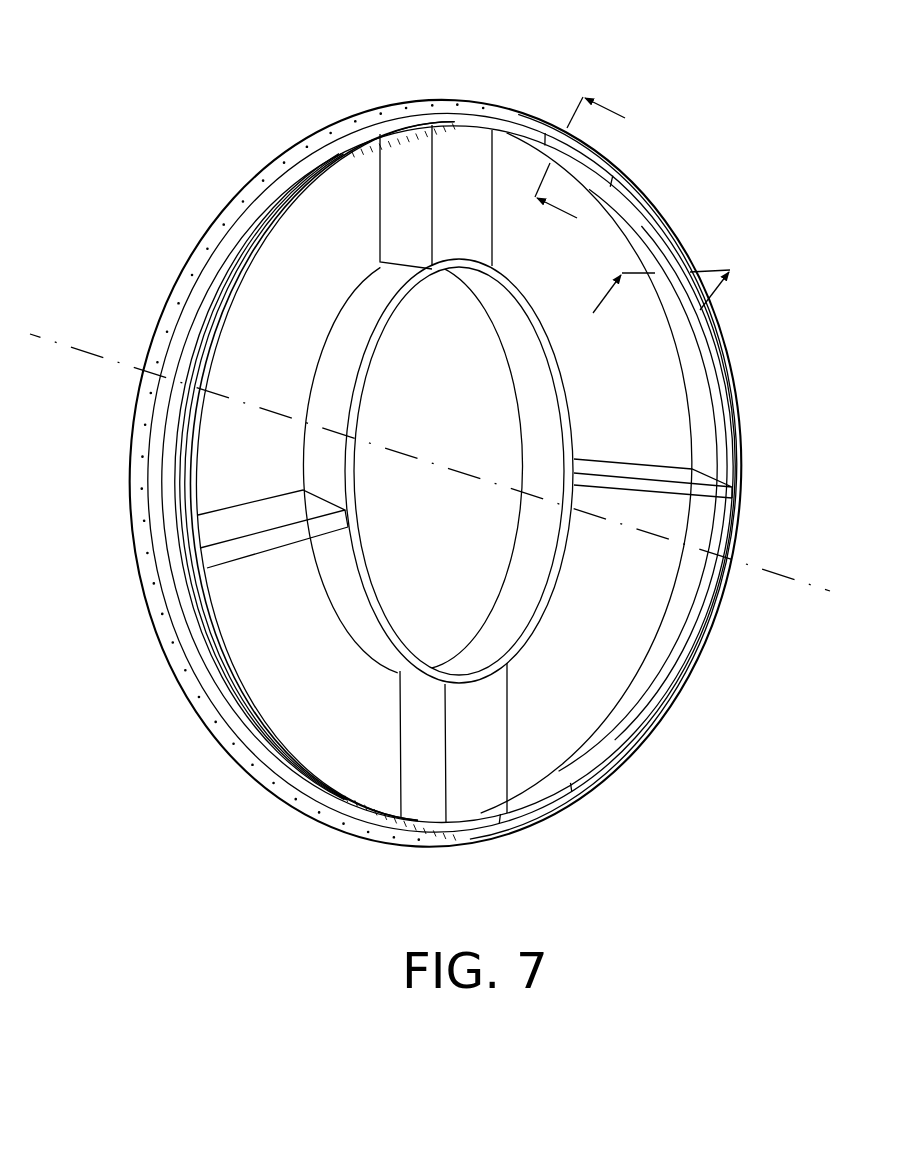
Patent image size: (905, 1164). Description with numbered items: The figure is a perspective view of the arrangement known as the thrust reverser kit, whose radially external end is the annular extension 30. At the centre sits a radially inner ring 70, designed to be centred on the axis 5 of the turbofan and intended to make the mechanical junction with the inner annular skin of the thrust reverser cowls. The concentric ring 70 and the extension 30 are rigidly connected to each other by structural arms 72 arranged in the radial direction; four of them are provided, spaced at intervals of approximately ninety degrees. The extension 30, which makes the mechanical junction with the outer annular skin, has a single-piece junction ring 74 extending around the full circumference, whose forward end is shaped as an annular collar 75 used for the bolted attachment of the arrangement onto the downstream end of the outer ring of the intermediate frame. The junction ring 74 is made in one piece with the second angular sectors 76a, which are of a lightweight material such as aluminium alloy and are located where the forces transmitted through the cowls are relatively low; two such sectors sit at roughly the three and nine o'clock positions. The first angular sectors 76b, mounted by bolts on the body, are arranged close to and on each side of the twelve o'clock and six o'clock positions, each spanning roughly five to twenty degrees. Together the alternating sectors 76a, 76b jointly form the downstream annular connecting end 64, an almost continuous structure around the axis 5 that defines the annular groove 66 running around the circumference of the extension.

The extension 30 is at (640, 157).
The axis 5 is at (805, 578).
The downstream annular connecting end 64 is at (249, 683).
The annular groove 66 is at (208, 395).
The radially inner ring 70 is at (510, 317).
The structural arms 72 is at (390, 198).
The junction ring 74 is at (313, 147).
The annular collar 75 is at (270, 168).
The second angular sectors 76a is at (417, 108).
The first angular sectors 76b is at (352, 128).